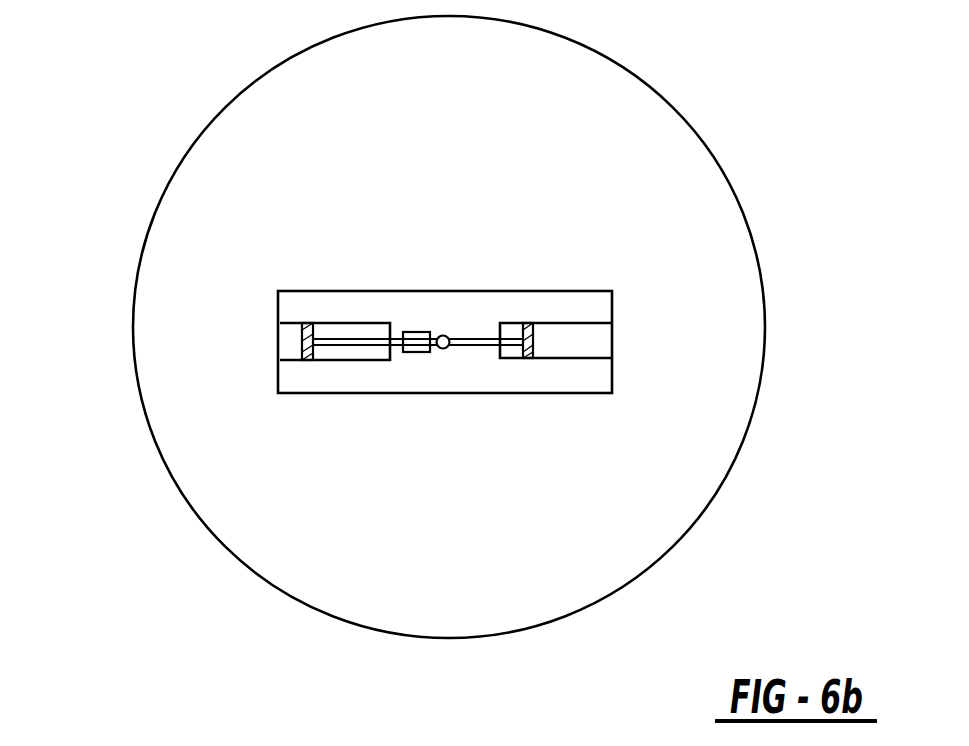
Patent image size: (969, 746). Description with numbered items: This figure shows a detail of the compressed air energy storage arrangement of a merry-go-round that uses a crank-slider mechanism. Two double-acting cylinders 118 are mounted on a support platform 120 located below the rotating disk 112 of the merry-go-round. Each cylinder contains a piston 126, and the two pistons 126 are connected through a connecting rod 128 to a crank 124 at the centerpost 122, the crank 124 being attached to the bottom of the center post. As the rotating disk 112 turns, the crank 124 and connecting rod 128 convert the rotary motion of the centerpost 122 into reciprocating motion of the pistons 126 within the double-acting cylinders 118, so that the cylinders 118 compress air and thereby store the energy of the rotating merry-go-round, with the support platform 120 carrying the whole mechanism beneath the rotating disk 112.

The rotating disk 112 is at (167, 187).
The double-acting cylinders 118 is at (330, 360).
The support platform 120 is at (547, 394).
The centerpost 122 is at (445, 336).
The crank 124 is at (417, 353).
The pistons 126 is at (302, 340).
The connecting rod 128 is at (447, 348).